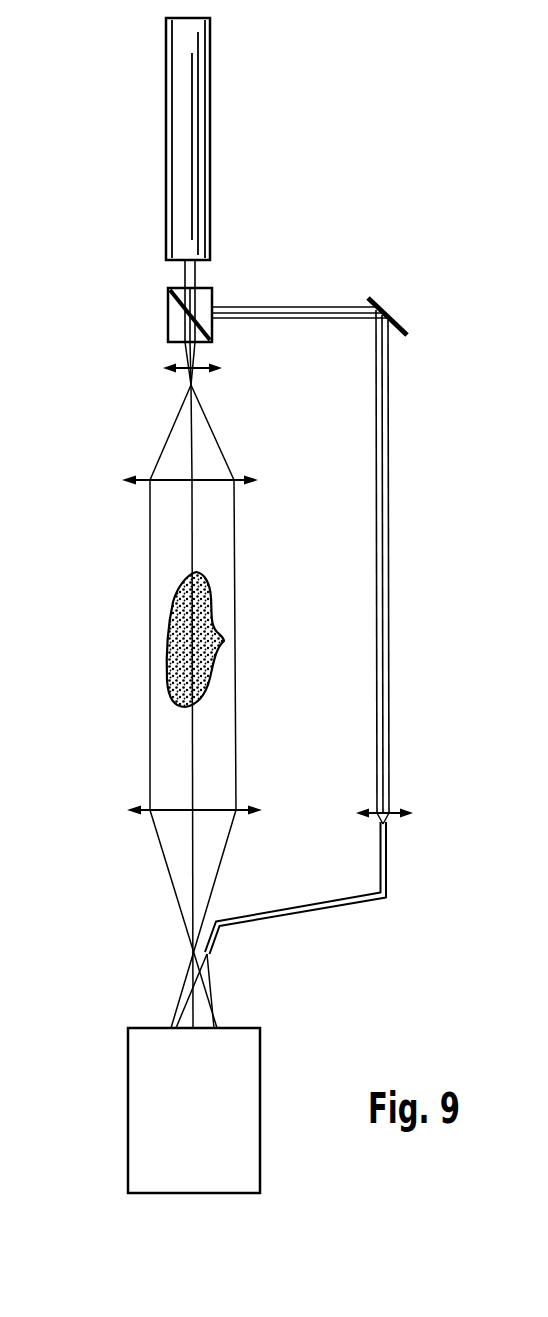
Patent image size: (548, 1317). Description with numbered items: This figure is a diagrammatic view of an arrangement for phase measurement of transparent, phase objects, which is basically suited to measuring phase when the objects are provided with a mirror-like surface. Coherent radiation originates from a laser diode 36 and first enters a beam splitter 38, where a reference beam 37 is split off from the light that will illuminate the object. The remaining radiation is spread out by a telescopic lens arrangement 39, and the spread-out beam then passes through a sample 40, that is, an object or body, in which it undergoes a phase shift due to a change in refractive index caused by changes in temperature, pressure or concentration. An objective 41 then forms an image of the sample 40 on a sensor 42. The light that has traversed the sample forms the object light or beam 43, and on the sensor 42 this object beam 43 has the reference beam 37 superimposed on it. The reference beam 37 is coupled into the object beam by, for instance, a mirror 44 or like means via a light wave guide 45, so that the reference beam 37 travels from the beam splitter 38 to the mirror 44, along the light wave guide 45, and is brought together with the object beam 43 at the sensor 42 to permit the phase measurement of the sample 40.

The laser diode 36 is at (177, 142).
The reference beam 37 is at (308, 305).
The beam splitter 38 is at (174, 318).
The telescopic lens arrangement 39 is at (212, 371).
The sample 40 is at (224, 641).
The objective 41 is at (127, 810).
The sensor 42 is at (142, 1044).
The object light or beam 43 is at (160, 732).
The mirror 44 is at (388, 312).
The light wave guide 45 is at (355, 898).